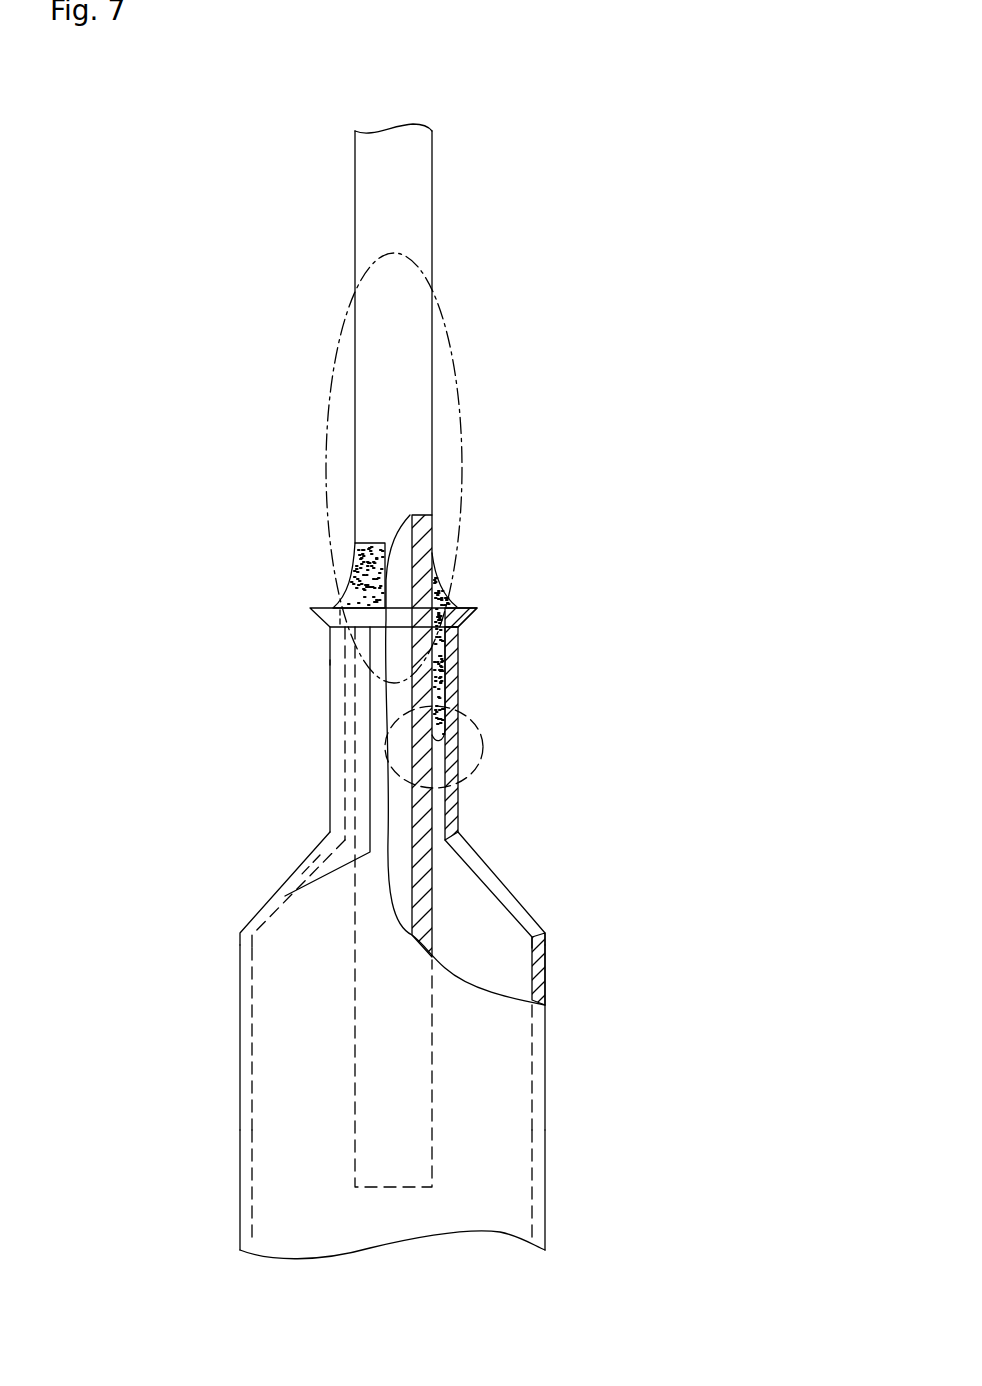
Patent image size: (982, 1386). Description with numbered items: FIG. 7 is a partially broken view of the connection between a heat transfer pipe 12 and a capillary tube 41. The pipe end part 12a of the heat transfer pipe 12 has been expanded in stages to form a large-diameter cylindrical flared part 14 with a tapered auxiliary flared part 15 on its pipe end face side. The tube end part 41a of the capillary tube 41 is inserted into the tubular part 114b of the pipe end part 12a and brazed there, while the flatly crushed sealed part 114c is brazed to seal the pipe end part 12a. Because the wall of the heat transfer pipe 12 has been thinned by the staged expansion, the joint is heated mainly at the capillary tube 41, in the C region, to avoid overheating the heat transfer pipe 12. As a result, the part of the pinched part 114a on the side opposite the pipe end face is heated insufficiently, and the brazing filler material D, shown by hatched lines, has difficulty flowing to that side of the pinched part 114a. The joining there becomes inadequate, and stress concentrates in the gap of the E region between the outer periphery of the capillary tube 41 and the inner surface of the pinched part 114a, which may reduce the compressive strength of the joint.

The capillary tube 41 is at (434, 184).
The tube end part 41a is at (333, 850).
The flared part 14 is at (332, 757).
The pinched part 114a is at (301, 641).
The tubular part 114b is at (372, 684).
The sealed part 114c is at (372, 780).
The auxiliary flared part 15 is at (310, 610).
The heat transfer pipe 12 is at (553, 1191).
The pipe end part 12a is at (552, 1064).
The C region C is at (464, 346).
The brazing filler material D is at (333, 604).
The E region E is at (483, 740).